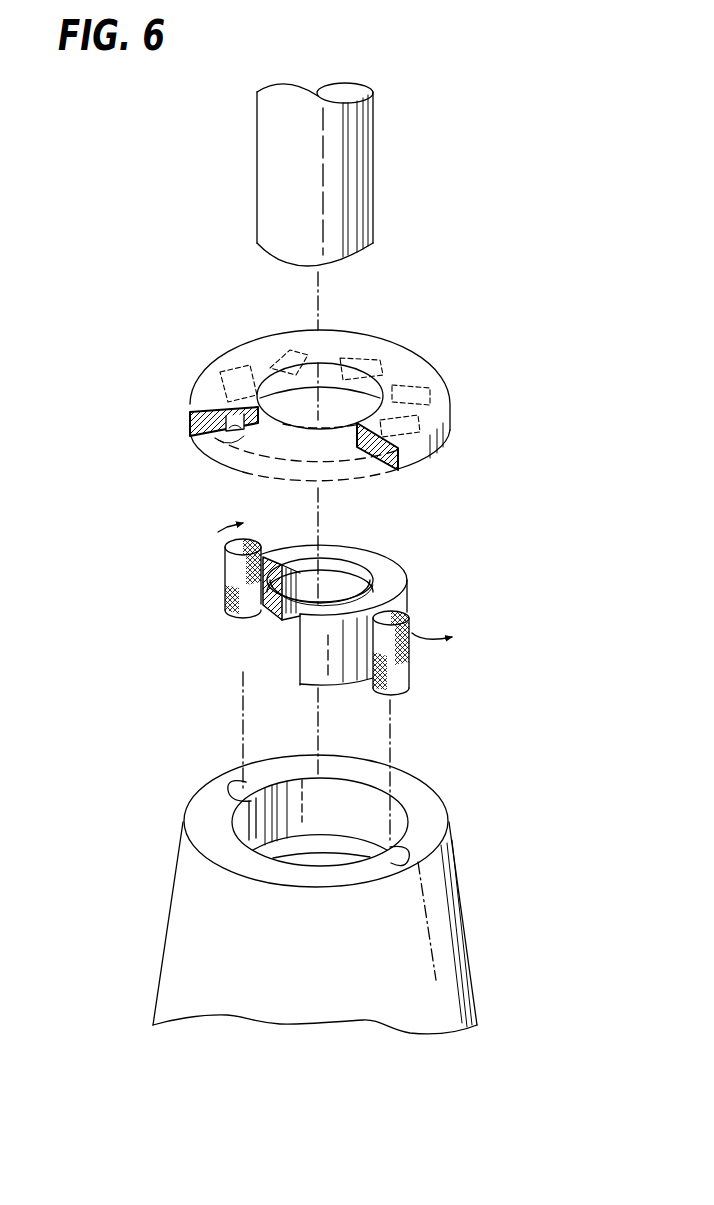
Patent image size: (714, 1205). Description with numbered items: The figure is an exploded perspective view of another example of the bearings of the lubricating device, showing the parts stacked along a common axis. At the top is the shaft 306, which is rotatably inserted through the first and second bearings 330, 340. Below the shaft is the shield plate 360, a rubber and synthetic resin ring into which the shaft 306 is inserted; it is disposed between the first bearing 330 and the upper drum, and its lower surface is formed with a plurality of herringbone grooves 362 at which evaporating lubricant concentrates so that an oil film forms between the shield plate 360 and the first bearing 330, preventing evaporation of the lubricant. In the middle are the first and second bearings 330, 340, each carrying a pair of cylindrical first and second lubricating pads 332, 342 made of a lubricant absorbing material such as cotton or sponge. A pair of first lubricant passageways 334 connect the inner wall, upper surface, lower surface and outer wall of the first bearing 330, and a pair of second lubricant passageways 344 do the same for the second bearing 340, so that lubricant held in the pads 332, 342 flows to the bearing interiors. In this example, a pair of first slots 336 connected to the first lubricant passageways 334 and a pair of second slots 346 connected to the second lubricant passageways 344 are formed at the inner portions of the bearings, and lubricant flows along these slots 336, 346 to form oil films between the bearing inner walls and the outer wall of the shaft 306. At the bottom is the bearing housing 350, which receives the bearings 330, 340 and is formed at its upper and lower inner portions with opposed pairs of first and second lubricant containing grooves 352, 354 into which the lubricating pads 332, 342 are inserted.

The shaft 306 is at (373, 175).
The shield plate 360 is at (242, 345).
The herringbone grooves 362 is at (215, 368).
The first bearing 330 is at (393, 588).
The second bearing 340 is at (388, 558).
The first lubricating pads 332 is at (470, 653).
The second lubricating pads 342 is at (409, 657).
The first lubricant passageways 334 is at (187, 596).
The second lubricant passageways 344 is at (267, 612).
The first slots 336 is at (244, 639).
The second slots 346 is at (302, 616).
The bearing housing 350 is at (412, 777).
The first lubricant containing grooves 352 is at (399, 817).
The second lubricant containing grooves 354 is at (403, 847).